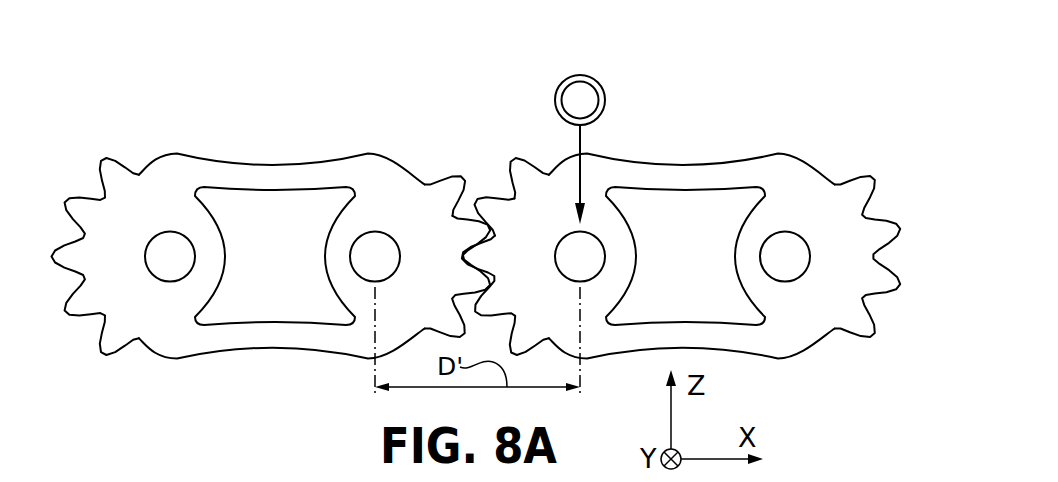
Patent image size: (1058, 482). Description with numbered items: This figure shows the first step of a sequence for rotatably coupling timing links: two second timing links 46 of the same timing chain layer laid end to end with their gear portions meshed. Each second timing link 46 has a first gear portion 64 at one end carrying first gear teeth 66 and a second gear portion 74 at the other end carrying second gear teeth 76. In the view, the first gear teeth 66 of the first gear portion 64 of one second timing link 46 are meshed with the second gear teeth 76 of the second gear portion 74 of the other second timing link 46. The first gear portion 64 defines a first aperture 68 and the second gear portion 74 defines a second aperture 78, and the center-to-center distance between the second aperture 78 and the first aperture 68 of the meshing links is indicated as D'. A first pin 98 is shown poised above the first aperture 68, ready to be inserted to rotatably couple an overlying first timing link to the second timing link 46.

The second timing link 46 is at (208, 157).
The second gear portion 74 is at (386, 124).
The first gear portion 64 is at (523, 124).
The second gear teeth 76 is at (450, 173).
The first gear teeth 66 is at (487, 197).
The first aperture 68 is at (598, 270).
The second aperture 78 is at (350, 260).
The first pin 98 is at (580, 74).